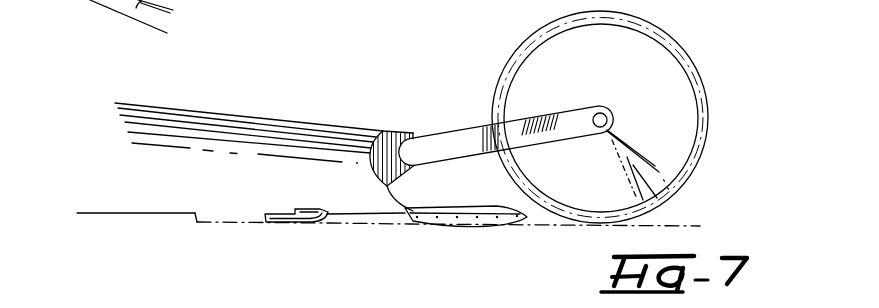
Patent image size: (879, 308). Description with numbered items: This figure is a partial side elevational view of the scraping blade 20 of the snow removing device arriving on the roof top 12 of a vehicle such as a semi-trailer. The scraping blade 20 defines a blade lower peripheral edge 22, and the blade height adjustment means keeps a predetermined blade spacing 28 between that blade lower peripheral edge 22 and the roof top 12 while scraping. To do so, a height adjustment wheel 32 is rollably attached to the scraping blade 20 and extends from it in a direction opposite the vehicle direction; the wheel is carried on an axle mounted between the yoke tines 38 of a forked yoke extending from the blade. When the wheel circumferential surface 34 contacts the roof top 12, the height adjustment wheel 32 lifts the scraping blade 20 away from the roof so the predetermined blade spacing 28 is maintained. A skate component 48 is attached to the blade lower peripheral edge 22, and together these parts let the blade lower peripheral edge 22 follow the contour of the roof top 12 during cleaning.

The roof top 12 is at (358, 227).
The scraping blade 20 is at (247, 163).
The blade lower peripheral edge 22 is at (162, 215).
The predetermined blade spacing 28 is at (197, 216).
The height adjustment wheel 32 is at (617, 56).
The wheel circumferential surface 34 is at (709, 131).
The yoke tines 38 is at (470, 139).
The skate components 48 is at (310, 220).